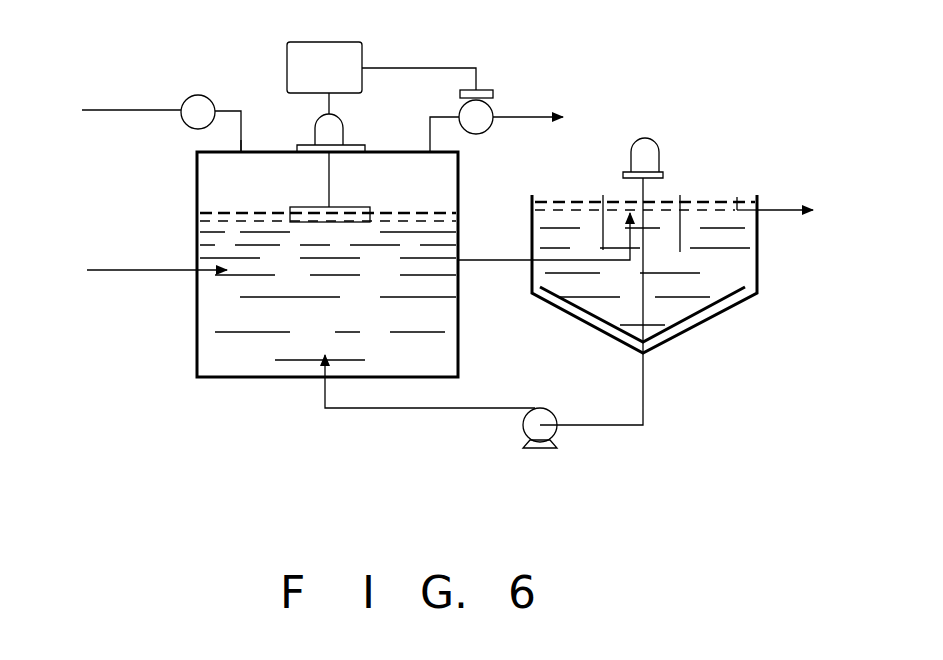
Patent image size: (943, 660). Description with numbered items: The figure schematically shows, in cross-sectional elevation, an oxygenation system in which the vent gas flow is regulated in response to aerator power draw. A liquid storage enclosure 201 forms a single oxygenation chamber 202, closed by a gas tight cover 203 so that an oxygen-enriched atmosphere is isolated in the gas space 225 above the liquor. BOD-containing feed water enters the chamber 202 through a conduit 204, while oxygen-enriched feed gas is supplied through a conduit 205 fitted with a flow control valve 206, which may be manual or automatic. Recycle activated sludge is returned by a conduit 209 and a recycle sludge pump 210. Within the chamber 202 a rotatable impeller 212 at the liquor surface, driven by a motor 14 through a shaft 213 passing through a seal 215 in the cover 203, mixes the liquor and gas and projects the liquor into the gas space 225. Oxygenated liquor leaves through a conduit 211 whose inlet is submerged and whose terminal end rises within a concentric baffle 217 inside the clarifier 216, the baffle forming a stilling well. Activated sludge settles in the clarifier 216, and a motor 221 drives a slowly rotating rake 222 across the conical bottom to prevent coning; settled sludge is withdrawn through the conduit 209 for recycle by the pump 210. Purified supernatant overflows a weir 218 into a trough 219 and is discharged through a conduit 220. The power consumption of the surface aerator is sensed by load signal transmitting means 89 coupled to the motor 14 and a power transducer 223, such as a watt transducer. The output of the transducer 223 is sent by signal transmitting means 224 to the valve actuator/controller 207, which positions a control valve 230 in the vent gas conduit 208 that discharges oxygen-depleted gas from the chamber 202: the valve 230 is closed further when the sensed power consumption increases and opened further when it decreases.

The motor 14 is at (343, 135).
The load signal transmitting means 89 is at (335, 100).
The liquid storage enclosure 201 is at (268, 378).
The oxygenation chamber 202 is at (365, 326).
The gas tight cover 203 is at (270, 152).
The conduit 204 is at (138, 268).
The conduit 205 is at (127, 110).
The flow control valve 206 is at (190, 98).
The valve actuator/controller 207 is at (493, 92).
The vent gas conduit 208 is at (522, 115).
The conduit 209 is at (600, 425).
The recycle sludge pump 210 is at (560, 400).
The conduit 211 is at (490, 262).
The rotatable impeller 212 is at (362, 207).
The shaft 213 is at (331, 178).
The seal 215 is at (325, 155).
The clarifier 216 is at (743, 258).
The concentric baffle 217 is at (681, 200).
The weir 218 is at (737, 198).
The trough 219 is at (752, 198).
The conduit 220 is at (772, 212).
The motor 221 is at (660, 145).
The rake 222 is at (700, 320).
The power transducer 223 is at (305, 42).
The signal transmitting means 224 is at (404, 68).
The gas space 225 is at (205, 180).
The control valve 230 is at (489, 128).